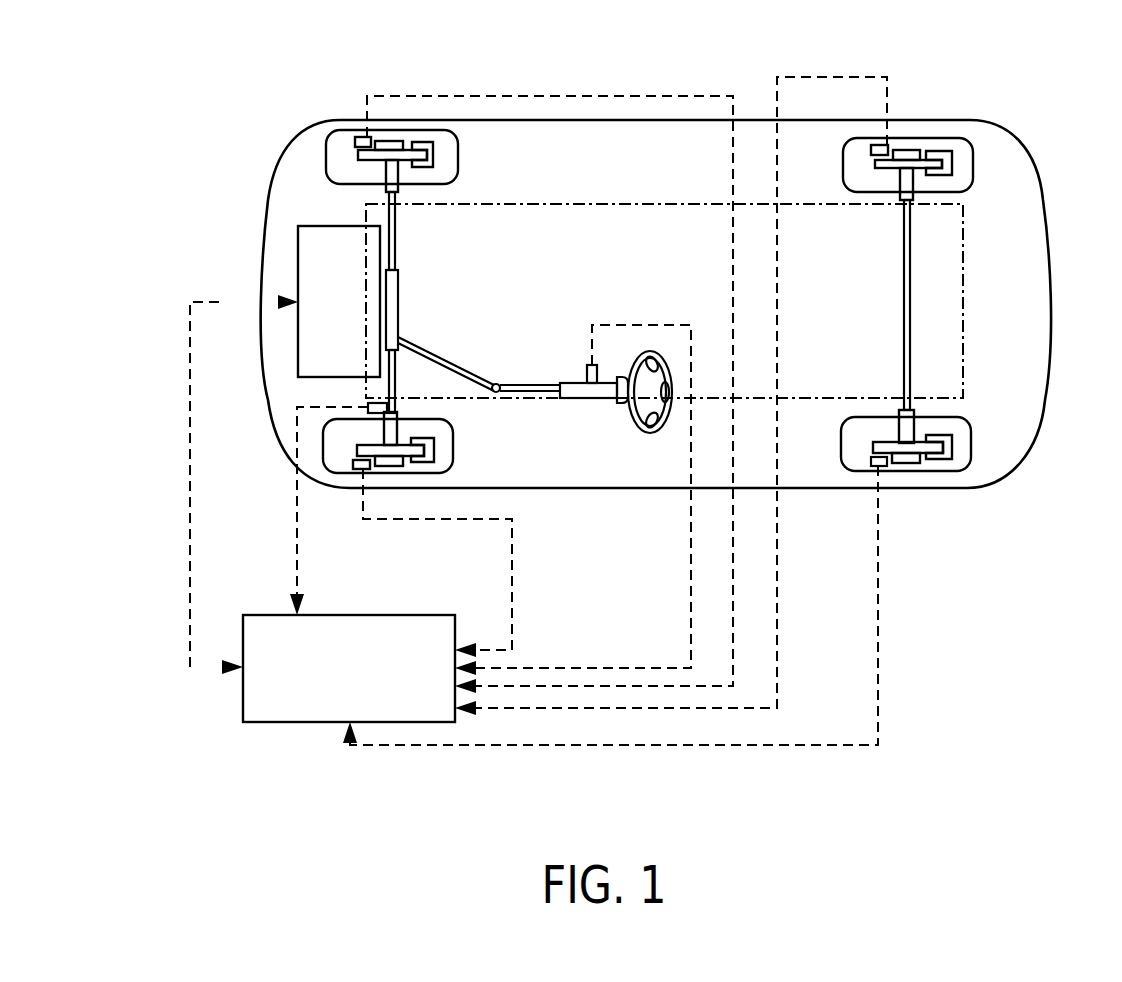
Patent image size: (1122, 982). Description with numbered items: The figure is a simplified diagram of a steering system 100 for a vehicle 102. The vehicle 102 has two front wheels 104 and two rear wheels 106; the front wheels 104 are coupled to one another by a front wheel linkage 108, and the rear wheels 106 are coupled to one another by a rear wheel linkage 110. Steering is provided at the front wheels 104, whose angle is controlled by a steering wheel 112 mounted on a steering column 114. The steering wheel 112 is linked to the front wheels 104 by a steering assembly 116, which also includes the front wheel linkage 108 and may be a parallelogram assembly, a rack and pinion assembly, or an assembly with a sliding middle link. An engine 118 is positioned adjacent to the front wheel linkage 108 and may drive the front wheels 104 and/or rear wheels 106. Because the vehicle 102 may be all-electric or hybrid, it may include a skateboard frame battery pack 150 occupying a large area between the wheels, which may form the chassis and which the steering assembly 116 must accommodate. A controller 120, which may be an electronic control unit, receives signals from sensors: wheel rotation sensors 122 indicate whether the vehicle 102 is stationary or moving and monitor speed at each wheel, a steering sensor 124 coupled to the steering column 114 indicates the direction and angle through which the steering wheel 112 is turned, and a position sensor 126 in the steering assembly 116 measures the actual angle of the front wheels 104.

The steering system 100 is at (703, 60).
The vehicle 102 is at (1055, 230).
The front wheels 104 is at (459, 158).
The rear wheels 106 is at (960, 192).
The front wheel linkage 108 is at (398, 217).
The rear wheel linkage 110 is at (912, 273).
The steering wheel 112 is at (643, 432).
The steering column 114 is at (602, 401).
The steering assembly 116 is at (472, 318).
The engine 118 is at (339, 301).
The controller 120 is at (349, 668).
The wheel rotation sensors 122 is at (870, 462).
The steering sensor 124 is at (585, 372).
The position sensor 126 is at (379, 402).
The skateboard frame battery pack 150 is at (637, 203).